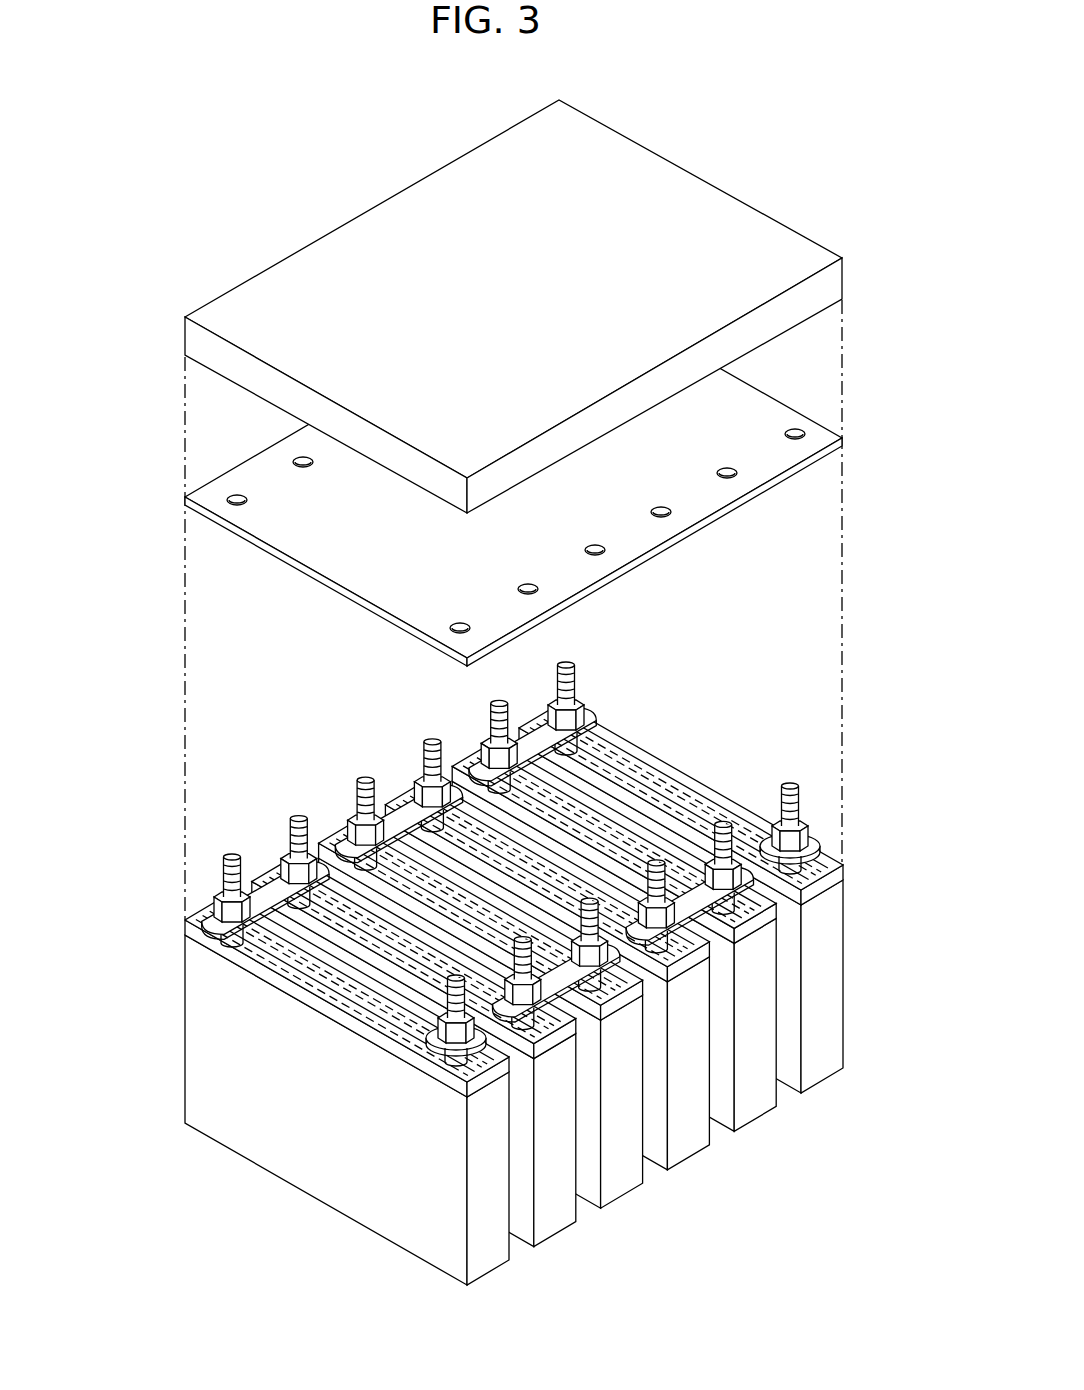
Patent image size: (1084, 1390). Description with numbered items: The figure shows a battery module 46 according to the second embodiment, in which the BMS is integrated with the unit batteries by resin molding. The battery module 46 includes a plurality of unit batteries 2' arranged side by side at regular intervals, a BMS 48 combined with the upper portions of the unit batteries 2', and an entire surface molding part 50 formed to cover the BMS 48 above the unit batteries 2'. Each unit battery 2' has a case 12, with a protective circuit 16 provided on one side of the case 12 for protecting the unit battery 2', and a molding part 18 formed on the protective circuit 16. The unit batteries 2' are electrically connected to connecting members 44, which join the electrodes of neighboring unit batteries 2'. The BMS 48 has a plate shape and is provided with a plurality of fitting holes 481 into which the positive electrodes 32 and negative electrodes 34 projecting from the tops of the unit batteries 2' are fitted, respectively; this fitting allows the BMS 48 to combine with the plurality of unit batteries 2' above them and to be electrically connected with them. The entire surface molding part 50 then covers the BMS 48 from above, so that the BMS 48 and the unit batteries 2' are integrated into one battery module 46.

The unit battery 2' is at (588, 1023).
The case 12 is at (233, 1149).
The protective circuit 16 is at (237, 961).
The molding part 18 is at (185, 927).
The positive electrode 32 is at (443, 1005).
The negative electrode 34 is at (803, 791).
The connecting member 44 is at (402, 795).
The battery module 46 is at (136, 739).
The BMS 48 is at (548, 471).
The fitting hole 481 is at (668, 510).
The entire surface molding part 50 is at (724, 223).